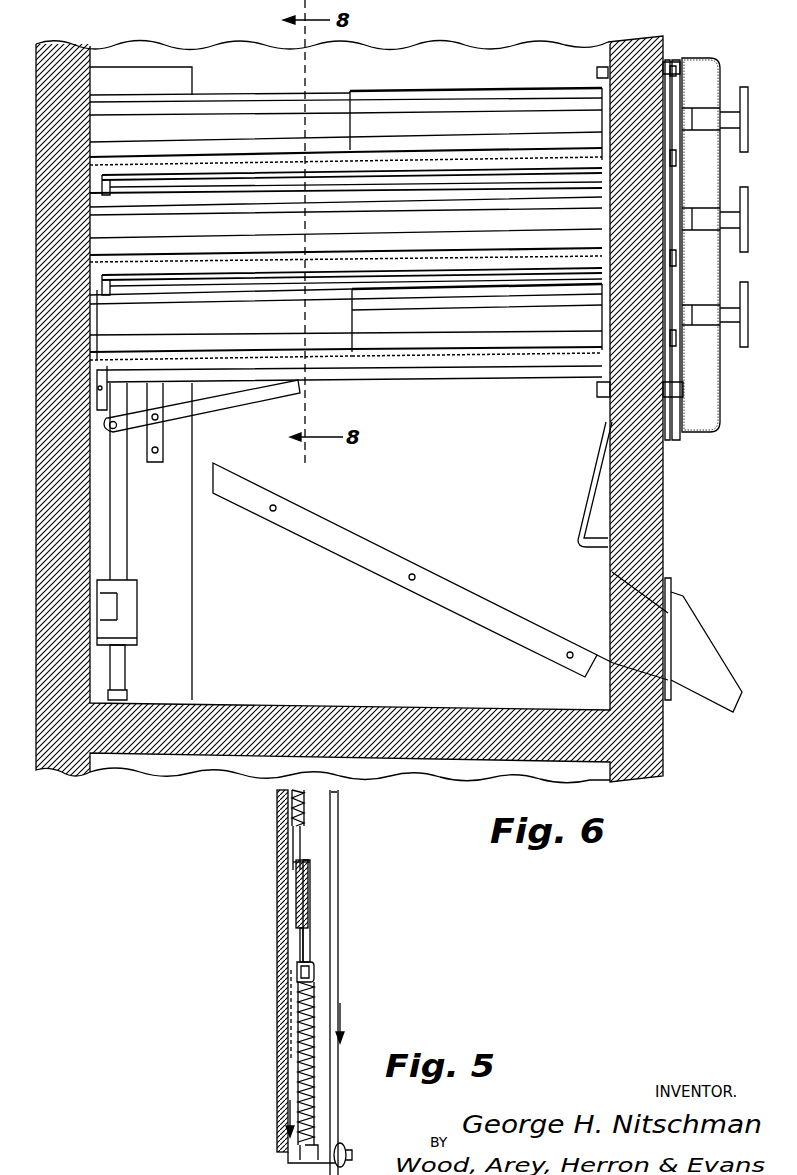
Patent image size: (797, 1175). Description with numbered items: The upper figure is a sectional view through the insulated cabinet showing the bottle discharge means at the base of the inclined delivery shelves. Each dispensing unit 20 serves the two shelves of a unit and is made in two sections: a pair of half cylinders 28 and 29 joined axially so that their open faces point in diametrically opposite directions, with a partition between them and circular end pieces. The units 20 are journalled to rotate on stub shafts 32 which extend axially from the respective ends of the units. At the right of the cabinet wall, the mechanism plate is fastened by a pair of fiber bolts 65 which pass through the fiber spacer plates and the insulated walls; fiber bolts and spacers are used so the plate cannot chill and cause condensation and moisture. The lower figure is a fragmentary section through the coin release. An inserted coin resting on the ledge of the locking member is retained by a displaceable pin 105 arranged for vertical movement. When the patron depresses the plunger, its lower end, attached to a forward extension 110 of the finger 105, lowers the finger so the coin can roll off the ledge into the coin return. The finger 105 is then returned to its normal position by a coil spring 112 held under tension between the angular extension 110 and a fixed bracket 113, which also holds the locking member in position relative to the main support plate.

In FIG. 6, the dispensing unit 20 is at (318, 95).
In FIG. 6, the half cylinder 28 is at (275, 110).
In FIG. 6, the half cylinder 29 is at (432, 84).
In FIG. 6, the stub shaft 32 is at (92, 222).
In FIG. 6, the fiber bolt 65 is at (660, 52).
In FIG. 5, the displaceable pin 105 is at (292, 905).
In FIG. 5, the fixed bracket 113 is at (305, 942).
In FIG. 5, the coil spring 112 is at (313, 993).
In FIG. 5, the forward extension 110 is at (330, 1150).